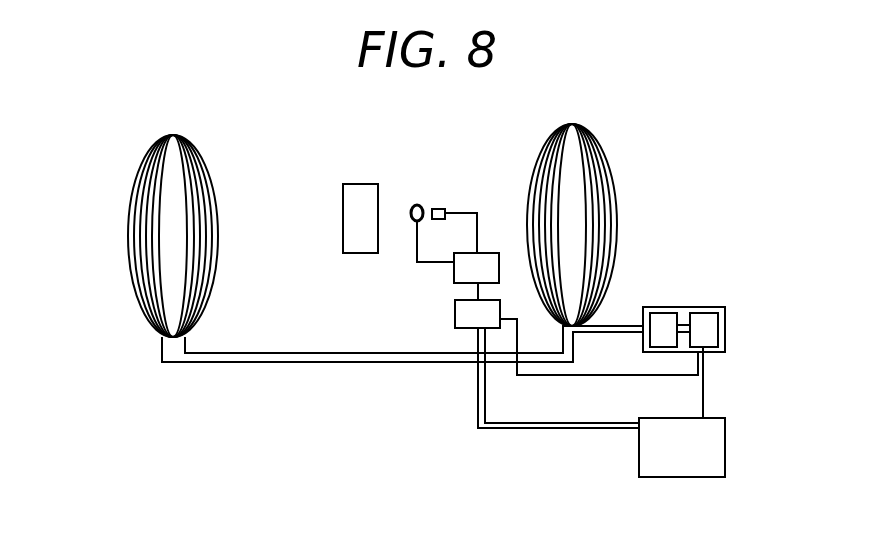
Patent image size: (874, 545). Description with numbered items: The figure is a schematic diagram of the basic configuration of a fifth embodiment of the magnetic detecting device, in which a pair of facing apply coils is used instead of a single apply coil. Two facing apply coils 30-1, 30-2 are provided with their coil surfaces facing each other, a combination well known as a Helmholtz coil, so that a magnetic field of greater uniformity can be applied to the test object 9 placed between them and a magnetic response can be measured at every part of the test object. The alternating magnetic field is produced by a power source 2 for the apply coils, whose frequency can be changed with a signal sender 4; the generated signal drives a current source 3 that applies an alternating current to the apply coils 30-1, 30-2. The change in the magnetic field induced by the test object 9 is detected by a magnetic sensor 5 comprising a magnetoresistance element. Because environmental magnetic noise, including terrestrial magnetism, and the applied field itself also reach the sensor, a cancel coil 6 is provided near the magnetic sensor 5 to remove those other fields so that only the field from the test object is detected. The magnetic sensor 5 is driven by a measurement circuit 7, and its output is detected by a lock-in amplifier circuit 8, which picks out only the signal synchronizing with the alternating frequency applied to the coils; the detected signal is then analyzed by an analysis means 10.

The facing apply coil 30-1 is at (155, 141).
The facing apply coil 30-2 is at (610, 187).
The test object 9 is at (353, 197).
The cancel coil 6 is at (405, 208).
The magnetic sensor 5 is at (438, 210).
The measurement circuit 7 is at (462, 278).
The lock-in amplifier circuit 8 is at (480, 320).
The power source 2 is at (717, 307).
The current source 3 is at (662, 322).
The signal sender 4 is at (713, 337).
The analysis means 10 is at (717, 458).